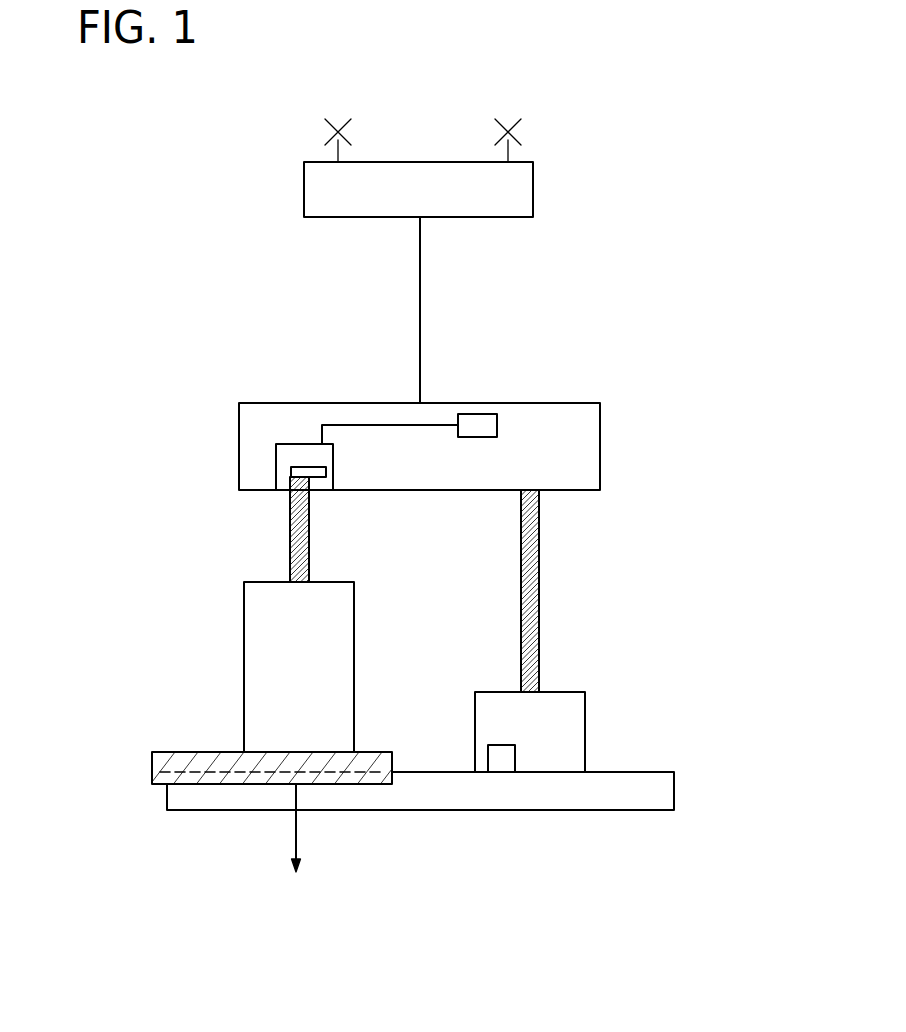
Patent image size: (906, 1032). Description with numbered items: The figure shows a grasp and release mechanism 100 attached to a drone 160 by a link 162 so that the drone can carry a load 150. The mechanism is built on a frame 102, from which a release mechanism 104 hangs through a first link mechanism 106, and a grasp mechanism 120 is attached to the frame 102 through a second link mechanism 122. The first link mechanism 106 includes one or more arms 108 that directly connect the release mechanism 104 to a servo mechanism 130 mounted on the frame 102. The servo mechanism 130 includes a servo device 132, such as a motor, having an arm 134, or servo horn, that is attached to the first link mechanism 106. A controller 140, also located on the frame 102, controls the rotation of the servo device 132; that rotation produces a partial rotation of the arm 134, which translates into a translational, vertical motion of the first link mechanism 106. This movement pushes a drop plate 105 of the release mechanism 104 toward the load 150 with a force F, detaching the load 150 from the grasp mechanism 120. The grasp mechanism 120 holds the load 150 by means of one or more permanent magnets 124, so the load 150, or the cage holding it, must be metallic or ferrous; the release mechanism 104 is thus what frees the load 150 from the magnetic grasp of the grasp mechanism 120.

The grasp and release mechanism 100 is at (650, 286).
The frame 102 is at (616, 438).
The release mechanism 104 is at (231, 674).
The drop plate 105 is at (152, 770).
The first link mechanism 106 is at (268, 615).
The arm 108 is at (308, 552).
The grasp mechanism 120 is at (592, 779).
The second link mechanism 122 is at (556, 608).
The permanent magnet 124 is at (502, 760).
The servo mechanism 130 is at (303, 426).
The servo device 132 is at (308, 457).
The arm 134 is at (312, 477).
The controller 140 is at (478, 415).
The load 150 is at (402, 795).
The drone 160 is at (426, 146).
The link 162 is at (422, 290).
The force F is at (295, 832).